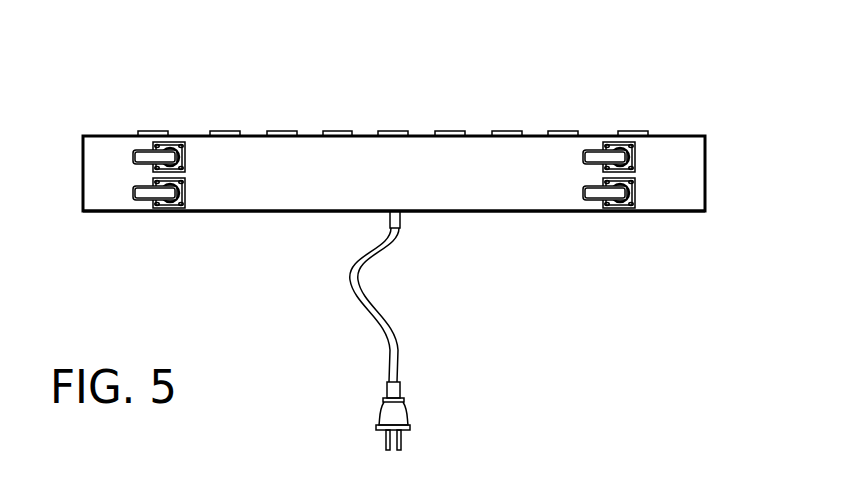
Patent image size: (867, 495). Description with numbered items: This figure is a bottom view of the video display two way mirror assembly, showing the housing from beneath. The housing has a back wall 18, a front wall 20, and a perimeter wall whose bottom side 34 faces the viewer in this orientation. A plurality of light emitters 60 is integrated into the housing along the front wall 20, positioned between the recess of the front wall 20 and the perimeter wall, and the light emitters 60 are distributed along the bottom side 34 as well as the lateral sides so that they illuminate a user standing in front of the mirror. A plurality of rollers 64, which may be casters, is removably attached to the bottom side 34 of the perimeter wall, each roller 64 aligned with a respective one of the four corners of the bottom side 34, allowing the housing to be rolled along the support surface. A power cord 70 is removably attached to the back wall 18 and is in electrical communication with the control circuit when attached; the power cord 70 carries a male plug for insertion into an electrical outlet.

The front wall 20 is at (678, 137).
The back wall 18 is at (522, 212).
The bottom side 34 is at (264, 185).
The light emitters 60 is at (278, 132).
The rollers 64 is at (157, 156).
The power cord 70 is at (358, 300).